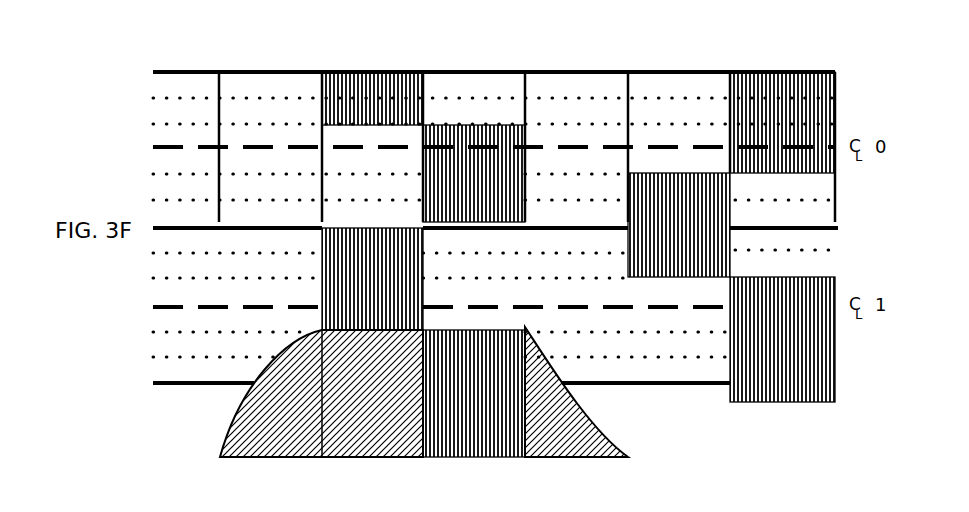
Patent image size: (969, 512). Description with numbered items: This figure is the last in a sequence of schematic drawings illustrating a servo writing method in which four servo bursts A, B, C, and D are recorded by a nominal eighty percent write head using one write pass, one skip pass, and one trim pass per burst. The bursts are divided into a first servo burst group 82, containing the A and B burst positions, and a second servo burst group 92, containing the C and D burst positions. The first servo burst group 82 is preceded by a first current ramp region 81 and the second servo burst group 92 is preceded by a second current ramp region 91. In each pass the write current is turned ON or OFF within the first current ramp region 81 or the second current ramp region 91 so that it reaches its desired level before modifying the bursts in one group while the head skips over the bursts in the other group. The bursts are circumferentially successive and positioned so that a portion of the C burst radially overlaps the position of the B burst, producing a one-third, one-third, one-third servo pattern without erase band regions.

The first current ramp region 81 is at (294, 41).
The first servo burst group 82 is at (488, 57).
The second current ramp region 91 is at (588, 49).
The second servo burst group 92 is at (793, 55).